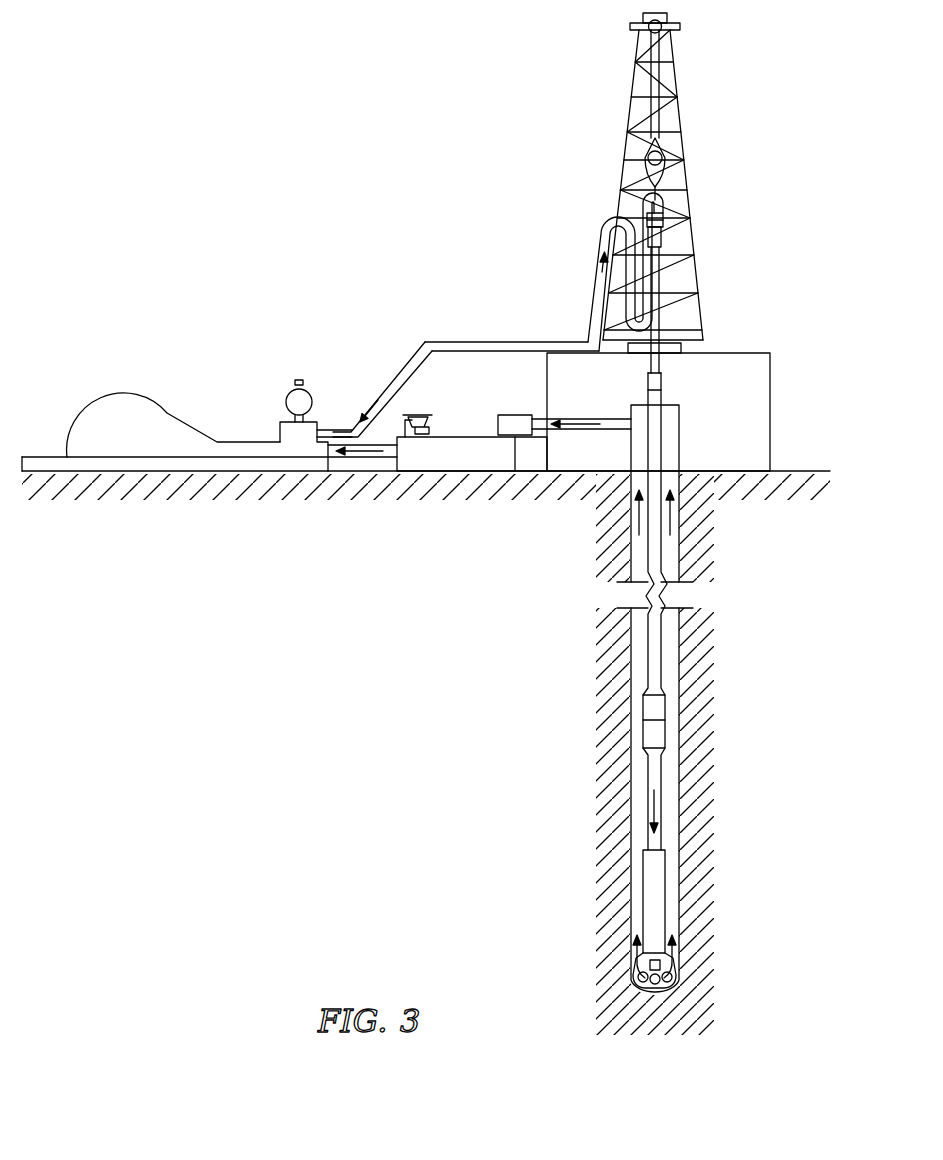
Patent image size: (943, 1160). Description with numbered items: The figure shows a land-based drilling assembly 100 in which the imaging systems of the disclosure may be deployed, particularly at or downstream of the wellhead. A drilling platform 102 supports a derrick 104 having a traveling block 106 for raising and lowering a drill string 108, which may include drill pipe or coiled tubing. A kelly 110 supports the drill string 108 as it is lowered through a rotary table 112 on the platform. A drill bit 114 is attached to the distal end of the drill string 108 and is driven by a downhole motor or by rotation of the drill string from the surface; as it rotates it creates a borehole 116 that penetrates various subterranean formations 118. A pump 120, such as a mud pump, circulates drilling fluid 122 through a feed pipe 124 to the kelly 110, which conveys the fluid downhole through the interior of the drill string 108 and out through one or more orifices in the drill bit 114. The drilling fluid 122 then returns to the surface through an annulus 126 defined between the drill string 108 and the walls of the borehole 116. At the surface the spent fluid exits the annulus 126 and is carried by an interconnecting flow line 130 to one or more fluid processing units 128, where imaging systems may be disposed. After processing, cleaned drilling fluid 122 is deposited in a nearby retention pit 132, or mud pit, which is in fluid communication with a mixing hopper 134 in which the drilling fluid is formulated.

The drilling assembly 100 is at (335, 102).
The drilling platform 102 is at (770, 363).
The derrick 104 is at (682, 112).
The traveling block 106 is at (670, 152).
The drill string 108 is at (672, 570).
The kelly 110 is at (662, 268).
The rotary table 112 is at (685, 350).
The drill bit 114 is at (670, 973).
The borehole 116 is at (682, 685).
The subterranean formations 118 is at (546, 752).
The pump 120 is at (136, 440).
The drilling fluid 122 is at (344, 430).
The feed pipe 124 is at (440, 340).
The annulus 126 is at (682, 812).
The fluid processing unit 128 is at (512, 414).
The interconnecting flow line 130 is at (600, 429).
The retention pit 132 is at (497, 462).
The mixing hopper 134 is at (427, 432).